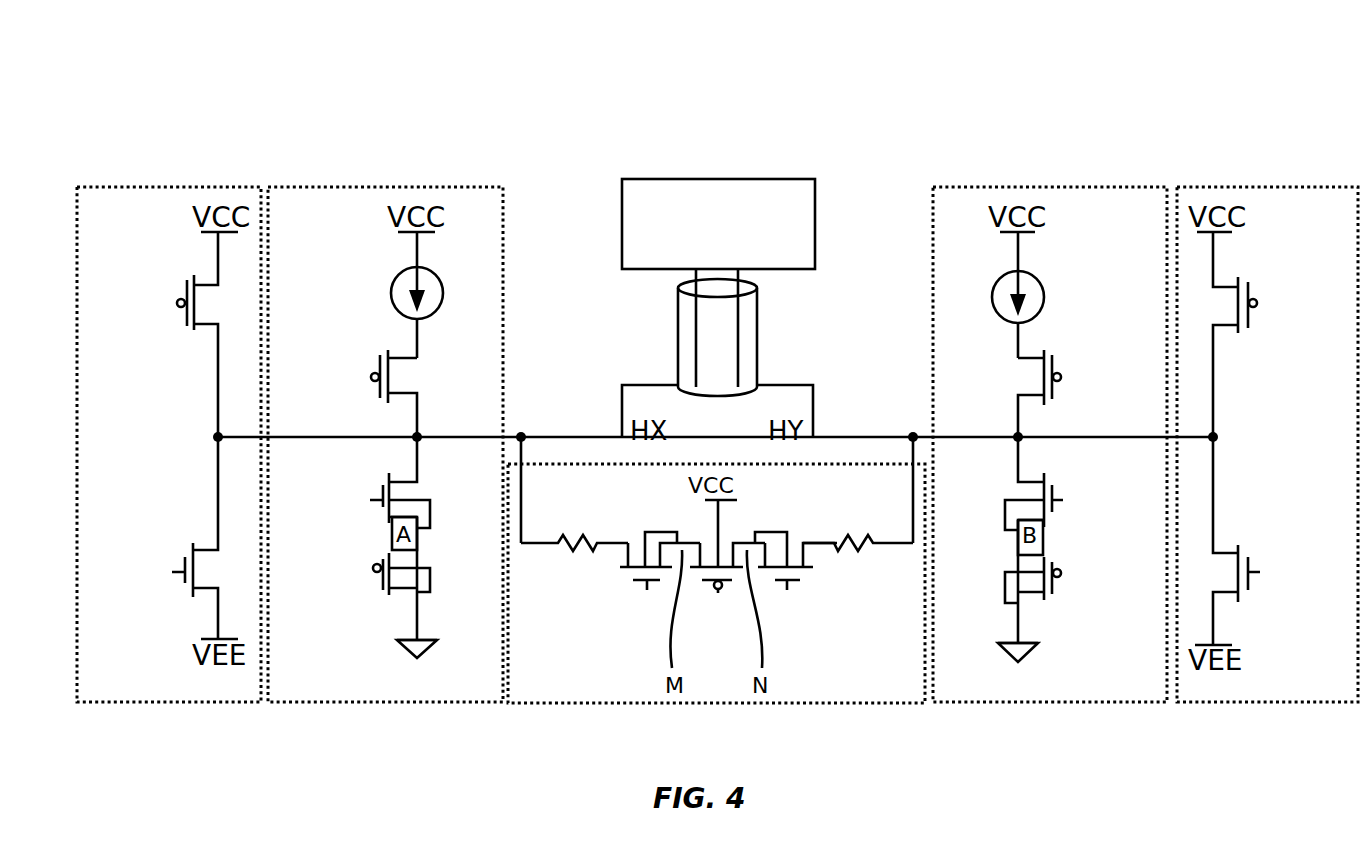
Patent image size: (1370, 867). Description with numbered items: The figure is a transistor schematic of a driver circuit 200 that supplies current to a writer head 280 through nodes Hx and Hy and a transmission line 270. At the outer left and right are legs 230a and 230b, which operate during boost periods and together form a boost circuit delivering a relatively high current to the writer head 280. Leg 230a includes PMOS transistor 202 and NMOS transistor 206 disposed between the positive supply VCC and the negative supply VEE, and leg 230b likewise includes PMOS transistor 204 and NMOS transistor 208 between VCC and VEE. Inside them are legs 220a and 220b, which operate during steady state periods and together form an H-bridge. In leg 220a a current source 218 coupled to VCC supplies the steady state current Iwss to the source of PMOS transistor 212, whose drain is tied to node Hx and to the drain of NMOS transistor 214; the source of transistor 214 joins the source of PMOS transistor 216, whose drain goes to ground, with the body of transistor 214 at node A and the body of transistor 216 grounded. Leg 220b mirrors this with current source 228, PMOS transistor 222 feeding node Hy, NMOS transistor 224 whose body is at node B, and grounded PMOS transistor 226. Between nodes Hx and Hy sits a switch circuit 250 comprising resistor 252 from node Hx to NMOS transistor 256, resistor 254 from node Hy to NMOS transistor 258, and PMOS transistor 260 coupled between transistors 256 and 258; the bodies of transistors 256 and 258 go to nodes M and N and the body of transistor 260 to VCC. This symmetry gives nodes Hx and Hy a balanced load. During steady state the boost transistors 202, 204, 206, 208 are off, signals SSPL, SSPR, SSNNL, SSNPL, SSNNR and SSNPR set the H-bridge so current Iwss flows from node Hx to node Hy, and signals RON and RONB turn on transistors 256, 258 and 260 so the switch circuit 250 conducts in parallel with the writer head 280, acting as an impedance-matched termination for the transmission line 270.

The driver circuit 200 is at (796, 92).
The PMOS transistor 202 is at (180, 314).
The PMOS transistor 204 is at (1252, 318).
The NMOS transistor 206 is at (183, 557).
The NMOS transistor 208 is at (1250, 560).
The PMOS transistor 212 is at (377, 368).
The NMOS transistor 214 is at (381, 488).
The PMOS transistor 216 is at (381, 583).
The current source 218 is at (390, 295).
The leg 220a is at (375, 187).
The leg 220b is at (1065, 187).
The PMOS transistor 222 is at (1060, 368).
The NMOS transistor 224 is at (1055, 491).
The PMOS transistor 226 is at (1055, 584).
The current source 228 is at (1046, 297).
The leg 230a is at (160, 187).
The leg 230b is at (1260, 187).
The switch circuit 250 is at (810, 704).
The resistor 252 is at (575, 594).
The resistor 254 is at (858, 594).
The NMOS transistor 256 is at (638, 550).
The NMOS transistor 258 is at (793, 550).
The PMOS transistor 260 is at (708, 550).
The transmission line 270 is at (760, 330).
The writer head 280 is at (717, 180).